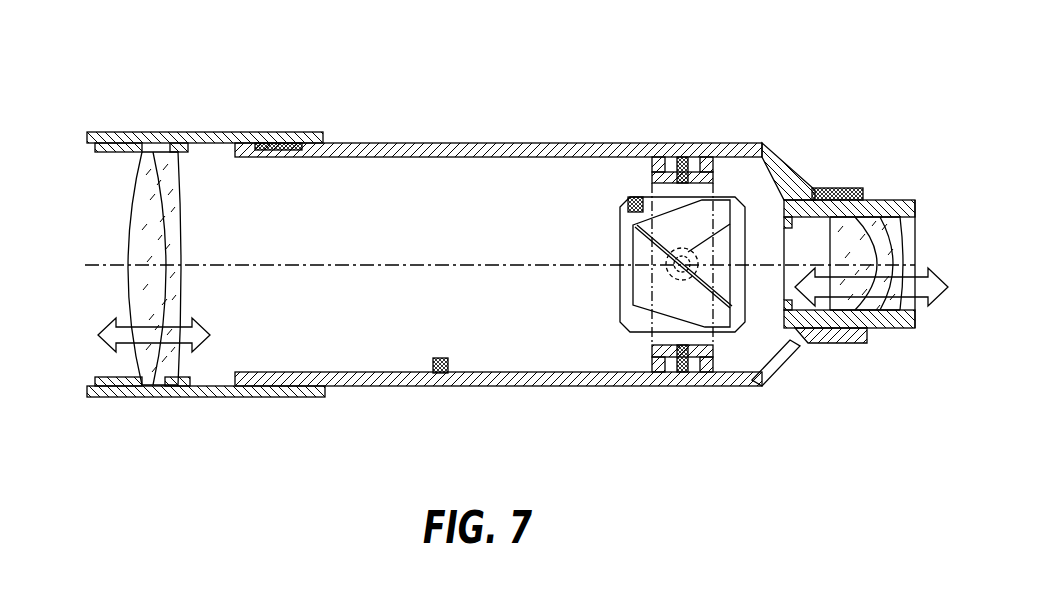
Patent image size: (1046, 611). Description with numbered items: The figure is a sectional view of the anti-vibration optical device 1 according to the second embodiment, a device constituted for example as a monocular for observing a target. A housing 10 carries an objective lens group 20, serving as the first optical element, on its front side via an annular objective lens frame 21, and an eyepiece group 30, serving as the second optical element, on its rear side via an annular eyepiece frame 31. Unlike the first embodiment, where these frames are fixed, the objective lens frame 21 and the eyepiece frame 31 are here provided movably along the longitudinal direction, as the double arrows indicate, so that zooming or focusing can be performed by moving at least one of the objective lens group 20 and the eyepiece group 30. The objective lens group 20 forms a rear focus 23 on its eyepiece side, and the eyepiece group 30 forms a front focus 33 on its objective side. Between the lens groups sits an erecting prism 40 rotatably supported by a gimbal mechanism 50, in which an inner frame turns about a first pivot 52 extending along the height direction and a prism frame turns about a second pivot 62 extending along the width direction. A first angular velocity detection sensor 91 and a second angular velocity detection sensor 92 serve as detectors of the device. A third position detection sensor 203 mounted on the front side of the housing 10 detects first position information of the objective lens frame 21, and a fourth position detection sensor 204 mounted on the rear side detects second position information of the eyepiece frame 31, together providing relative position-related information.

The anti-vibration optical device 1 is at (876, 89).
The housing 10 is at (362, 387).
The objective lens group 20 is at (133, 193).
The objective lens frame 21 is at (190, 397).
The third position detection sensor 203 is at (277, 142).
The fourth position detection sensor 204 is at (825, 187).
The rear focus 23 is at (783, 267).
The front focus 33 is at (783, 267).
The eyepiece group 30 is at (915, 243).
The eyepiece frame 31 is at (895, 330).
The erecting prism 40 is at (740, 238).
The gimbal mechanism 50 is at (729, 186).
The first pivot 52 is at (680, 158).
The second pivot 62 is at (657, 272).
The first angular velocity detection sensor 91 is at (433, 366).
The second angular velocity detection sensor 92 is at (627, 198).